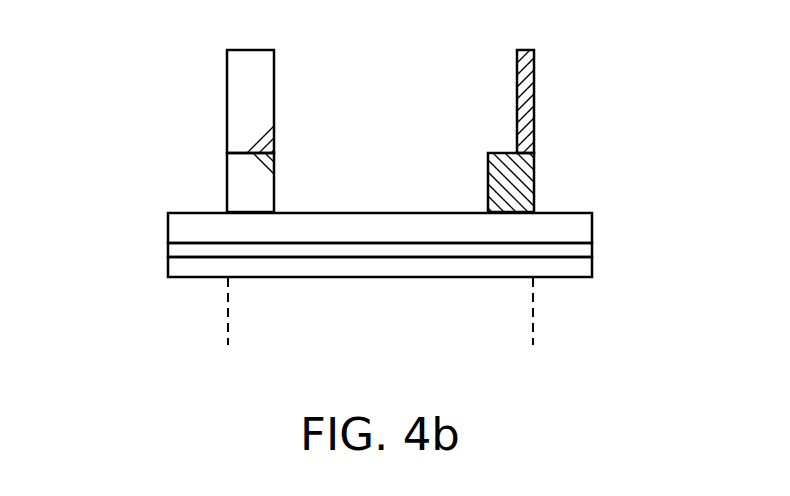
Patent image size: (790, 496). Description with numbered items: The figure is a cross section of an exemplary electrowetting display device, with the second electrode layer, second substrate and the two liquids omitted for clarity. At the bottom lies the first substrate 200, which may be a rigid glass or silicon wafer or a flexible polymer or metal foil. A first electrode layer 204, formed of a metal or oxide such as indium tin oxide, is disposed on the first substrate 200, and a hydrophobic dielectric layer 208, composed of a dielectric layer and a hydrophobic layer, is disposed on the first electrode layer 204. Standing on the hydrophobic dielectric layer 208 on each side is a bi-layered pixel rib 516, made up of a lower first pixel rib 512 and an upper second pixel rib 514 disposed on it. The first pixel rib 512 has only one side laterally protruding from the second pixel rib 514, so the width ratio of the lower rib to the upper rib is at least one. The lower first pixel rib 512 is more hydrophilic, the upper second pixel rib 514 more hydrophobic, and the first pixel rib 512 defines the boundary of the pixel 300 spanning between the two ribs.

The first substrate 200 is at (168, 268).
The first electrode layer 204 is at (168, 250).
The hydrophobic dielectric layer 208 is at (168, 229).
The pixel 300 is at (228, 334).
The first pixel rib 512 is at (240, 178).
The second pixel rib 514 is at (235, 128).
The bi-layered pixel rib 516 is at (403, 150).